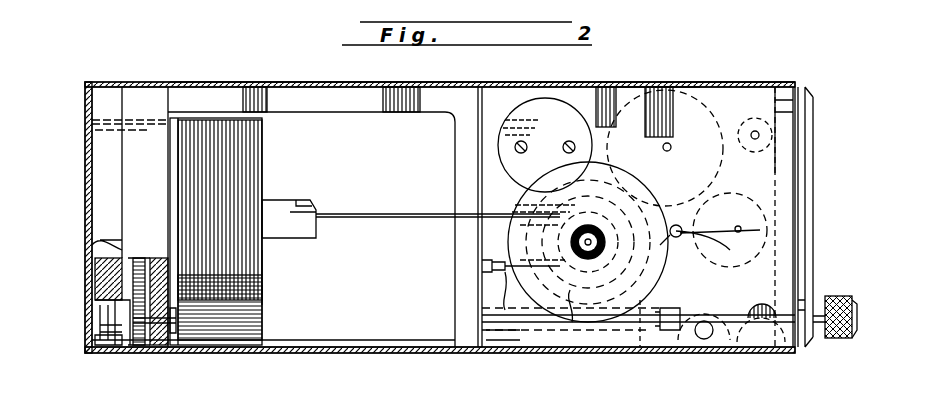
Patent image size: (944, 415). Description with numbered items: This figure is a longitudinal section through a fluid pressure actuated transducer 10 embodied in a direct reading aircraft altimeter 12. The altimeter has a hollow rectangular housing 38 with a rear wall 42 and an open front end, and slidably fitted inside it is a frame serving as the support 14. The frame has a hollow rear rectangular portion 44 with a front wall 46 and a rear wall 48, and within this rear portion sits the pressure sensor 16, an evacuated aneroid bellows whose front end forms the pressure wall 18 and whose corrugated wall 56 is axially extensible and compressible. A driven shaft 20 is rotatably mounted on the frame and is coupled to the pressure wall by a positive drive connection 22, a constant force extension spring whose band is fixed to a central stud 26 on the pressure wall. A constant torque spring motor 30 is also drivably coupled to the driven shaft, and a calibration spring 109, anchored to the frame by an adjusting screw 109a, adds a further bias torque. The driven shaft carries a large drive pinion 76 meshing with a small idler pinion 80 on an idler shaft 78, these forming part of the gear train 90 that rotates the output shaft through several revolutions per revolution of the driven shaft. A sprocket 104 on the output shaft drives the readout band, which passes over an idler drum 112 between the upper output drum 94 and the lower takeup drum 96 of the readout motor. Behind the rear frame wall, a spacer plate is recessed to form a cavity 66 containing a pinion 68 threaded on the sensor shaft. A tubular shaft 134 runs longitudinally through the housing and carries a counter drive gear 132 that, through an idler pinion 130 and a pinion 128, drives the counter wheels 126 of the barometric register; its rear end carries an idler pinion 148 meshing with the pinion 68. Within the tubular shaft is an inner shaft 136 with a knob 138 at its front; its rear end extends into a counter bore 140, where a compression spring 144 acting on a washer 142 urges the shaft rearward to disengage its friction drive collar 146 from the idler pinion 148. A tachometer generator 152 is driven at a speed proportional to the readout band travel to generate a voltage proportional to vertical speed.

The fluid pressure actuated transducer 10 is at (709, 74).
The direct reading aircraft altimeter 12 is at (236, 78).
The support 14 is at (470, 287).
The pressure sensor 16 is at (272, 299).
The pressure wall 18 is at (265, 262).
The driven shaft 20 is at (590, 248).
The positive drive connection 22 is at (397, 217).
The central stud 26 is at (304, 200).
The constant torque spring motor 30 is at (494, 343).
The housing 38 is at (675, 80).
The rear wall 42 is at (97, 270).
The hollow rear rectangular portion 44 is at (250, 352).
The front wall 46 is at (447, 112).
The rear wall 48 is at (176, 112).
The corrugated wall 56 is at (235, 120).
The cavity 66 is at (92, 245).
The pinion 68 is at (137, 258).
The large drive pinion 76 is at (512, 245).
The idler shaft 78 is at (700, 220).
The small idler pinion 80 is at (684, 216).
The gear train 90 is at (684, 244).
The output drum 94 is at (636, 78).
The takeup drum 96 is at (641, 350).
The sprocket 104 is at (800, 234).
The calibration spring 109 is at (576, 325).
The adjusting screw 109a is at (500, 285).
The idler drum 112 is at (790, 145).
The counter wheels 126 is at (808, 281).
The pinion 128 is at (763, 345).
The idler pinion 130 is at (707, 342).
The counter drive gear 132 is at (674, 331).
The tubular shaft 134 is at (598, 324).
The inner shaft 136 is at (530, 325).
The knob 138 is at (836, 340).
The counter bore 140 is at (100, 350).
The washer 142 is at (105, 320).
The compression spring 144 is at (95, 300).
The friction drive collar 146 is at (135, 350).
The idler pinion 148 is at (150, 340).
The tachometer generator 152 is at (555, 100).